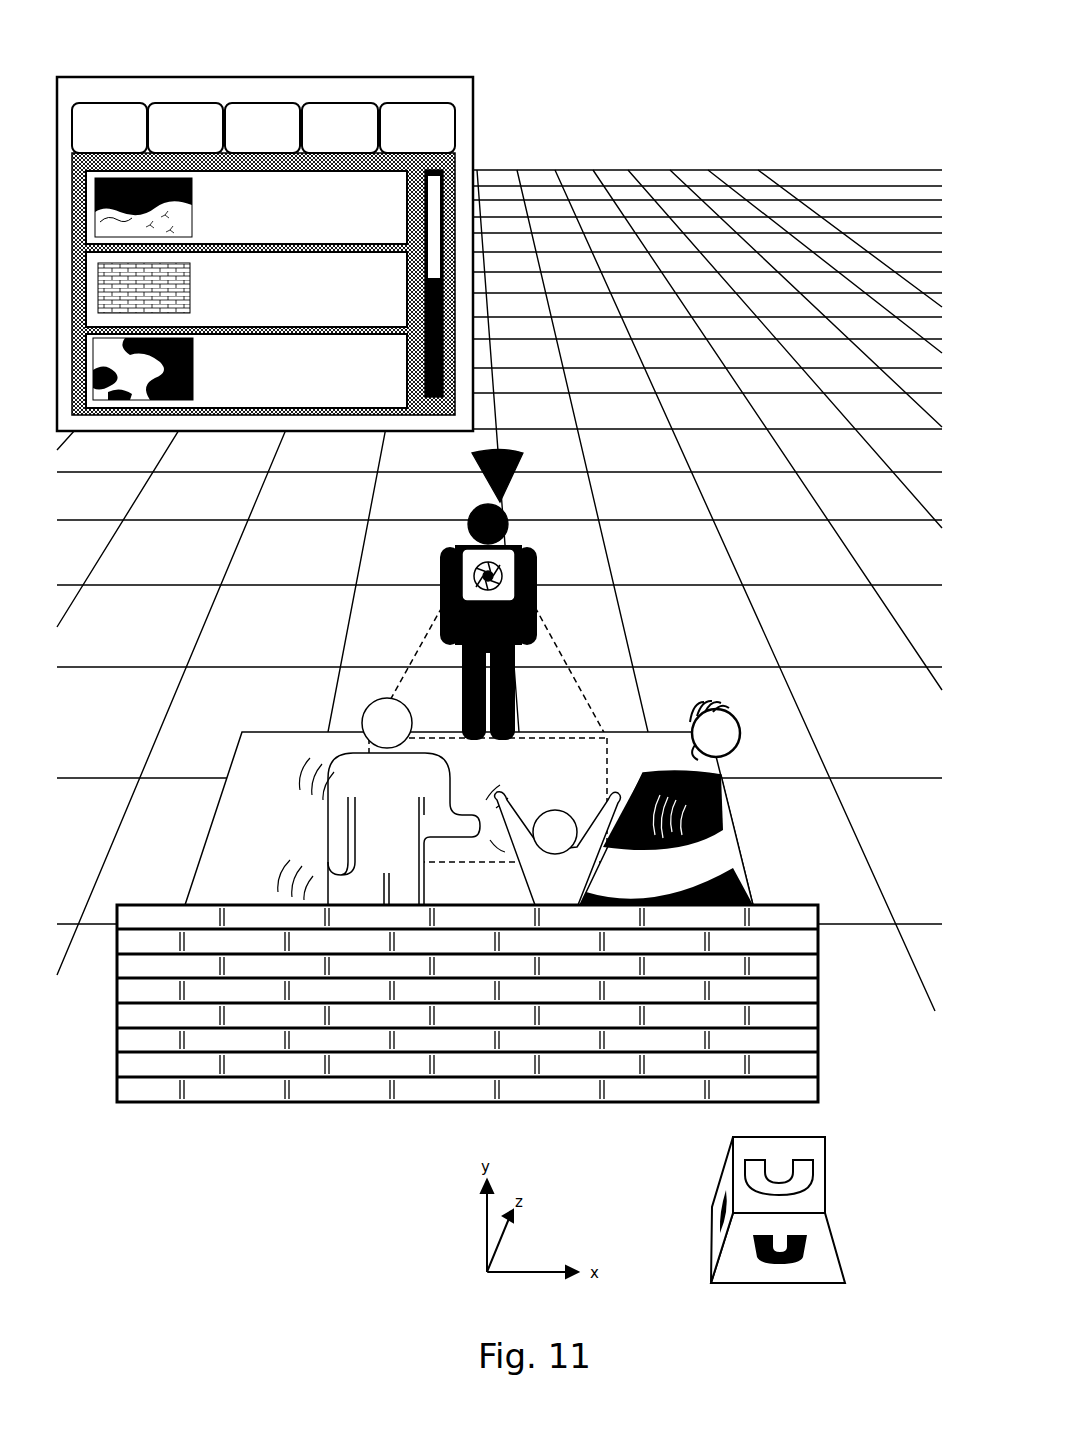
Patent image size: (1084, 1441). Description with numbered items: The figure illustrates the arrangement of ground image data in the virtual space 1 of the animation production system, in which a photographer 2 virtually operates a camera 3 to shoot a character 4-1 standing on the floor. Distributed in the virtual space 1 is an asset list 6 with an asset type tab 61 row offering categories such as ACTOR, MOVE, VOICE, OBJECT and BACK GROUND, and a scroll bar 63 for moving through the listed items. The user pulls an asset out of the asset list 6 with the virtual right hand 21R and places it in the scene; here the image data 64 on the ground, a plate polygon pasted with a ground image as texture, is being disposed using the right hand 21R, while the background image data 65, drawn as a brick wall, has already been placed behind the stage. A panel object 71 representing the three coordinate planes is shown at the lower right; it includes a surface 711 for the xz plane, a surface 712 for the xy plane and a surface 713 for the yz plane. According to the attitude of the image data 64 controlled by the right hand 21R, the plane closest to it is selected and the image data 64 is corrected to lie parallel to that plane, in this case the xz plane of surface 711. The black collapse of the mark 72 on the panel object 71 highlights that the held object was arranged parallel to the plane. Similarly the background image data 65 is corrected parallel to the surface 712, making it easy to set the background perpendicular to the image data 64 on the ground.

The virtual space 1 is at (783, 135).
The photographer 2 is at (499, 595).
The camera 3 is at (513, 563).
The character 4-1 is at (337, 805).
The asset list 6 is at (312, 216).
The virtual right hand 21R is at (740, 730).
The asset type tab 61 is at (473, 115).
The scroll bar 63 is at (438, 232).
The image data on the ground 64 is at (720, 800).
The background image data 65 is at (818, 1008).
The panel object 71 is at (774, 1224).
The surface 711 is at (837, 1243).
The surface 712 is at (825, 1173).
The surface 713 is at (712, 1242).
The mark 72 is at (790, 1263).